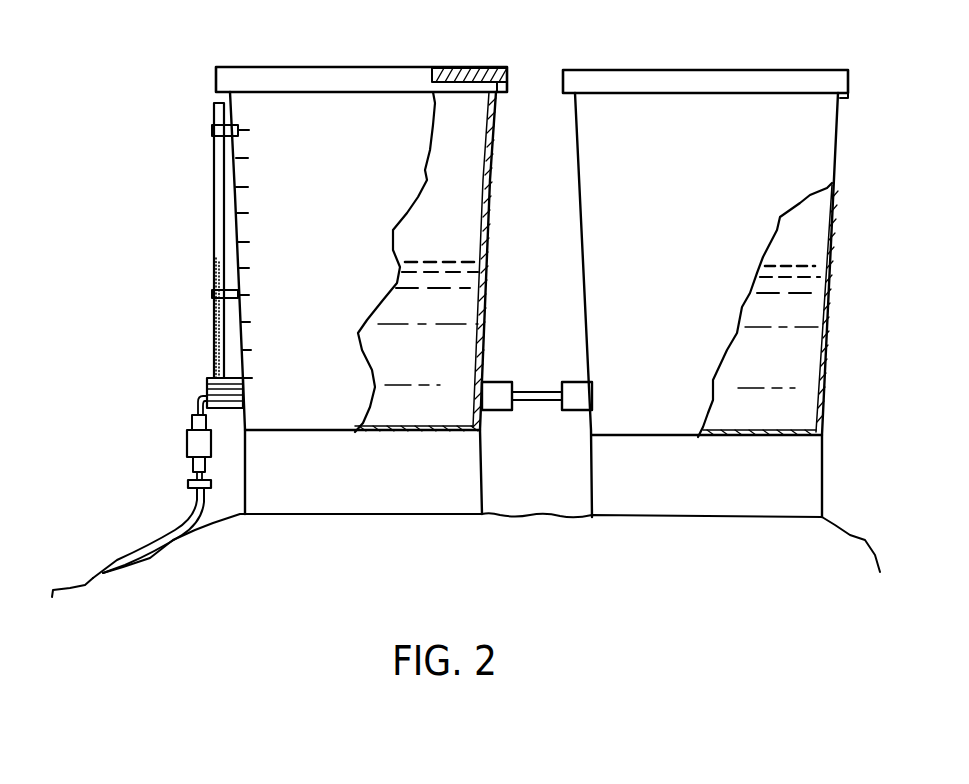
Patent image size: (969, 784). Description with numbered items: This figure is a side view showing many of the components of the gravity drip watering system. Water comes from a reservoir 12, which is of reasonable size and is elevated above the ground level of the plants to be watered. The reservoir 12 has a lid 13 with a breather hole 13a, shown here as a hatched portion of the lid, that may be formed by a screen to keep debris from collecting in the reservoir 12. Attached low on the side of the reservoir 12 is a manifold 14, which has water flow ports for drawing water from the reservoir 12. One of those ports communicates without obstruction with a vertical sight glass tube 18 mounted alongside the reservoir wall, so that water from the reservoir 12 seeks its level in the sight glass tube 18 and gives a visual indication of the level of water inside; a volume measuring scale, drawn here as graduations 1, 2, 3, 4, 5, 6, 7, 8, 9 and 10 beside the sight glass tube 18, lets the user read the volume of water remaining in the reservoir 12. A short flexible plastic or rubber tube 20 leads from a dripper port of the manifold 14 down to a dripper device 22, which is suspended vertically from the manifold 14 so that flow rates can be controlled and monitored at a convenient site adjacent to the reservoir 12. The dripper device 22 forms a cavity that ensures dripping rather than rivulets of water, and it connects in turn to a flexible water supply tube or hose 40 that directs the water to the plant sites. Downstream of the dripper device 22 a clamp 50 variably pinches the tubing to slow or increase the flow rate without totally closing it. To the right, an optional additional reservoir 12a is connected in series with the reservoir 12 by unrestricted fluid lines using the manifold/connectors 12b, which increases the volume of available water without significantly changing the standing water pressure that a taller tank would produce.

The reservoir 12 is at (392, 110).
The additional reservoir 12a is at (727, 108).
The manifold/connectors 12b is at (538, 392).
The lid 13 is at (360, 75).
The breather hole 13a is at (455, 70).
The sight glass tube 18 is at (213, 188).
The manifold 14 is at (207, 383).
The tube 20 is at (196, 398).
The dripper device 22 is at (187, 446).
The clamp 50 is at (190, 485).
The water supply tube or hose 40 is at (131, 546).
The scale graduation 1 is at (255, 378).
The scale graduation 2 is at (254, 350).
The scale graduation 3 is at (253, 322).
The scale graduation 4 is at (251, 295).
The scale graduation 5 is at (251, 268).
The scale graduation 6 is at (251, 242).
The scale graduation 7 is at (250, 213).
The scale graduation 8 is at (249, 187).
The scale graduation 9 is at (249, 158).
The scale graduation 10 is at (257, 130).